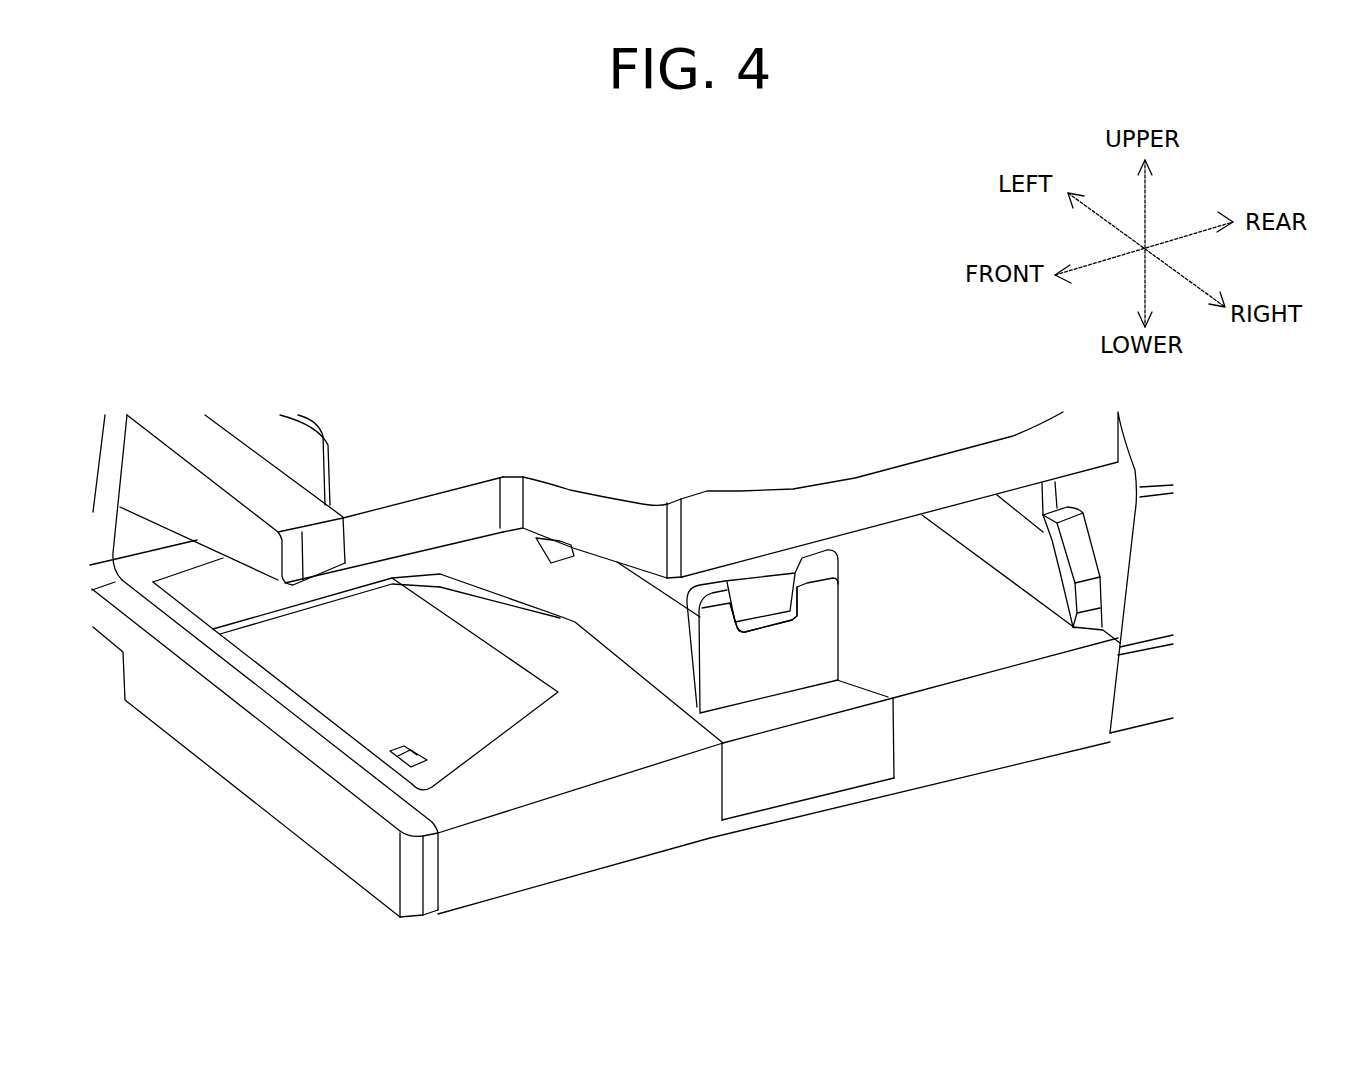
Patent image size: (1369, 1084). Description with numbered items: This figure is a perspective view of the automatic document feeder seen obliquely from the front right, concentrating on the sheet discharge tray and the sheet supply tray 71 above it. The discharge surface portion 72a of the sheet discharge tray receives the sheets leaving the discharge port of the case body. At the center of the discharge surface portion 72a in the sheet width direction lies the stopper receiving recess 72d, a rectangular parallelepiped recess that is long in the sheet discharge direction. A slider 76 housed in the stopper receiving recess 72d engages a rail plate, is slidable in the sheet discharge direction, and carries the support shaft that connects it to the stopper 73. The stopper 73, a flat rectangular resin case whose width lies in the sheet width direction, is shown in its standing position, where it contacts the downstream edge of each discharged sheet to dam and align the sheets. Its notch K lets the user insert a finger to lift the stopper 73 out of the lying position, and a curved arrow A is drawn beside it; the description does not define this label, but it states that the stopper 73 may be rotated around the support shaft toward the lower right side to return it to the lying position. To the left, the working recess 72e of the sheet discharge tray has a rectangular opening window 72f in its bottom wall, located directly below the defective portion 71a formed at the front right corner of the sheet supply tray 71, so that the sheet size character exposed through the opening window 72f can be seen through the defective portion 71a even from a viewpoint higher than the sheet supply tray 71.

The sheet supply tray 71 is at (910, 497).
The defective portion 71a is at (567, 510).
The discharge surface portion 72a is at (915, 645).
The stopper receiving recess 72d is at (640, 621).
The working recess 72e is at (364, 680).
The opening window 72f is at (400, 755).
The stopper 73 is at (764, 660).
The slider 76 is at (690, 707).
The notch K is at (762, 598).
The rotation direction A is at (997, 627).